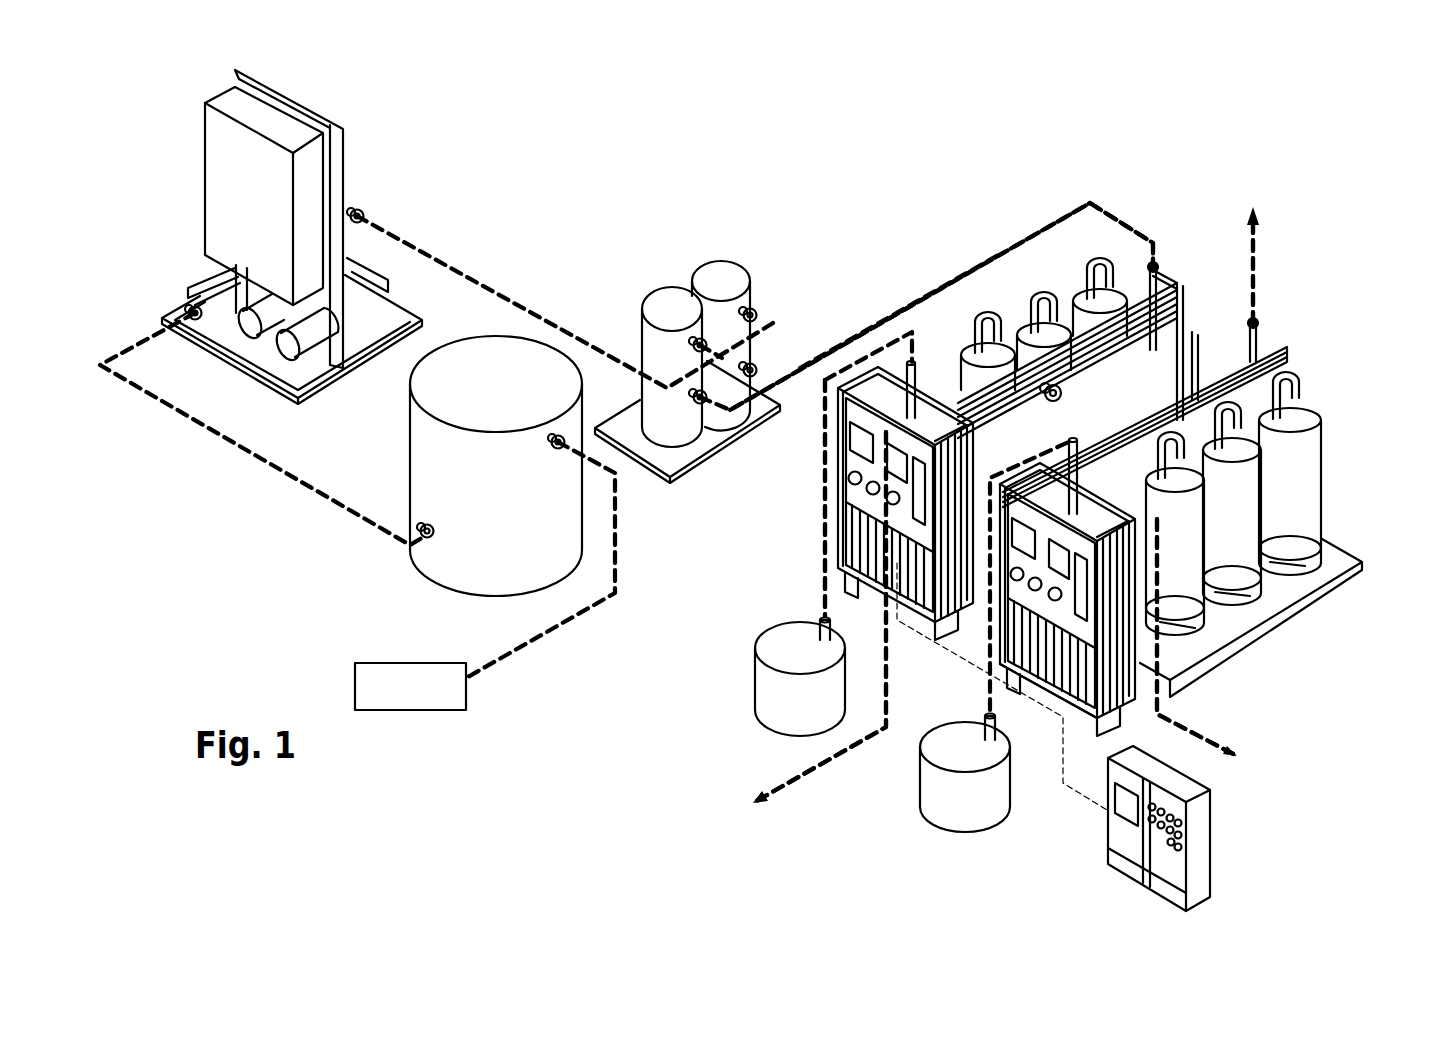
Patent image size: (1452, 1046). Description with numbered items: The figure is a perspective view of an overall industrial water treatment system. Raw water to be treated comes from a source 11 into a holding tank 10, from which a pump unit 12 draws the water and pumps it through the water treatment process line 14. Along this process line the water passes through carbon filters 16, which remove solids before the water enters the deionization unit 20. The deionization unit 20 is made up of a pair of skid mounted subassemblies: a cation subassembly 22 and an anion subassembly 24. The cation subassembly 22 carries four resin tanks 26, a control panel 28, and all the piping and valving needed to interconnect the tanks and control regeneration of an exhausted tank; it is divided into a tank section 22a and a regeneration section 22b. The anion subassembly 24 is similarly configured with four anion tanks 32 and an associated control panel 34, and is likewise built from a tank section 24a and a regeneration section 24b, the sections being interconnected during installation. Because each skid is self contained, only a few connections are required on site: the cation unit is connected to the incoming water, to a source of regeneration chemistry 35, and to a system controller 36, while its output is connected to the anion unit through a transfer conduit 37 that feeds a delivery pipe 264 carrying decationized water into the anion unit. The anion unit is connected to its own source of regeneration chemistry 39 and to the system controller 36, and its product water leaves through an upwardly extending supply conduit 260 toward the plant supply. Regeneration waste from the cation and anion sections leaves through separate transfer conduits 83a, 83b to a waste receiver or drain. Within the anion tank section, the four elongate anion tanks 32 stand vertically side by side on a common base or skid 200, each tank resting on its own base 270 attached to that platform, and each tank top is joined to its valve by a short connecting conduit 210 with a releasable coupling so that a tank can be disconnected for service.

The holding tank 10 is at (496, 466).
The source 11 is at (391, 706).
The pump unit 12 is at (372, 172).
The water treatment process line 14 is at (1172, 133).
The carbon filters 16 is at (765, 268).
The deionization unit 20 is at (1267, 297).
The cation subassembly 22 is at (1040, 252).
The tank section 22a is at (1185, 290).
The regeneration section 22b is at (831, 471).
The anion subassembly 24 is at (1277, 503).
The tank section 24a is at (1310, 375).
The regeneration section 24b is at (1112, 714).
The resin tanks 26 is at (980, 373).
The control panel 28 is at (855, 495).
The anion tanks 32 is at (1233, 503).
The control panel 34 is at (1047, 603).
The source of regeneration chemistry 35 is at (983, 259).
The system controller 36 is at (1200, 858).
The transfer conduit 37 is at (1075, 412).
The source of regeneration chemistry 39 is at (965, 773).
The transfer conduit 83a is at (845, 754).
The transfer conduit 83b is at (1178, 724).
The common base or skid 200 is at (1338, 557).
The short connecting conduit 210 is at (1300, 383).
The supply conduit 260 is at (1257, 343).
The delivery pipe 264 is at (1200, 357).
The base 270 is at (1295, 567).